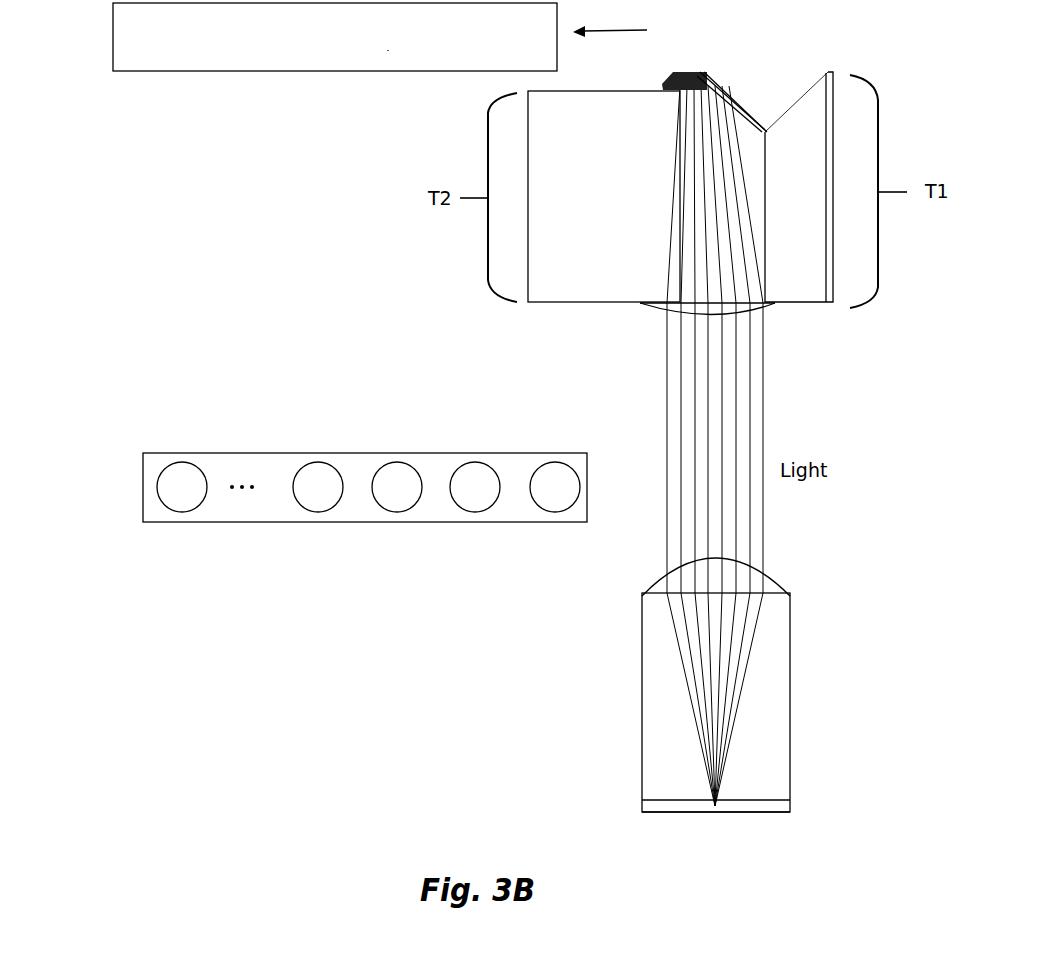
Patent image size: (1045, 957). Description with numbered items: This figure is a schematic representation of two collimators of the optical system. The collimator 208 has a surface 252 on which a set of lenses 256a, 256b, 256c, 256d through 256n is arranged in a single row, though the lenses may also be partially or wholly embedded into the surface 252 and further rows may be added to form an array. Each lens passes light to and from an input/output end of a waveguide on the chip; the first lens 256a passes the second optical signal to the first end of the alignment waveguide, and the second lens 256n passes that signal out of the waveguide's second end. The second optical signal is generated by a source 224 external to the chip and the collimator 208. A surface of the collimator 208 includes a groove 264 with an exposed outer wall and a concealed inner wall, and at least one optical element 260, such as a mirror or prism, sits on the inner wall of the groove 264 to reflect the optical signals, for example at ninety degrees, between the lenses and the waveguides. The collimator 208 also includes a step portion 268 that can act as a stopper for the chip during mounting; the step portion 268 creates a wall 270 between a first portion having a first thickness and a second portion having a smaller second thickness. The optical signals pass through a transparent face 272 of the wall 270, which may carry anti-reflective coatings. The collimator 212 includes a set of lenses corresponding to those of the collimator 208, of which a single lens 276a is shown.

The wall 270 is at (112, 36).
The face 272 is at (388, 50).
The step portion 268 is at (662, 83).
The optical element 260 is at (738, 112).
The groove 264 is at (778, 96).
The collimator 208 is at (416, 243).
The surface 252 is at (428, 445).
The first lens 256a is at (547, 510).
The lens 256b is at (472, 510).
The lens 256c is at (397, 510).
The lens 256d is at (335, 507).
The second lens 256n is at (163, 507).
The lens 276a is at (773, 583).
The collimator 212 is at (787, 666).
The source 224 is at (717, 811).